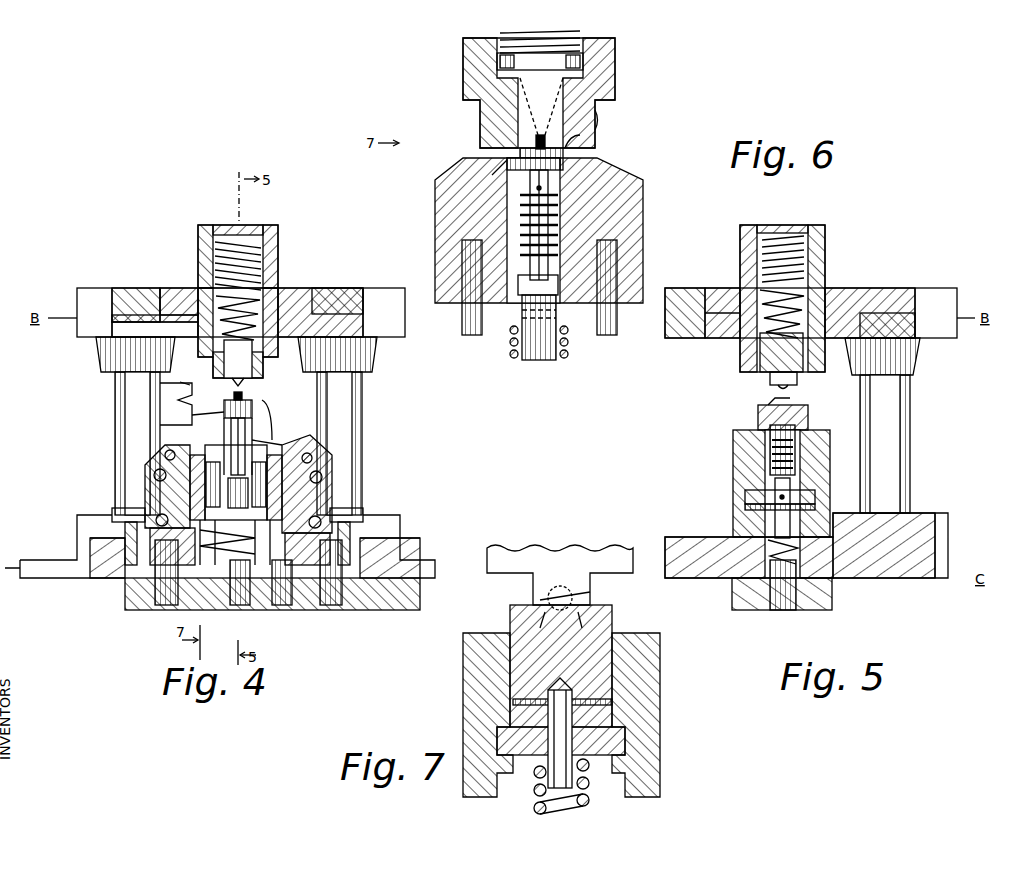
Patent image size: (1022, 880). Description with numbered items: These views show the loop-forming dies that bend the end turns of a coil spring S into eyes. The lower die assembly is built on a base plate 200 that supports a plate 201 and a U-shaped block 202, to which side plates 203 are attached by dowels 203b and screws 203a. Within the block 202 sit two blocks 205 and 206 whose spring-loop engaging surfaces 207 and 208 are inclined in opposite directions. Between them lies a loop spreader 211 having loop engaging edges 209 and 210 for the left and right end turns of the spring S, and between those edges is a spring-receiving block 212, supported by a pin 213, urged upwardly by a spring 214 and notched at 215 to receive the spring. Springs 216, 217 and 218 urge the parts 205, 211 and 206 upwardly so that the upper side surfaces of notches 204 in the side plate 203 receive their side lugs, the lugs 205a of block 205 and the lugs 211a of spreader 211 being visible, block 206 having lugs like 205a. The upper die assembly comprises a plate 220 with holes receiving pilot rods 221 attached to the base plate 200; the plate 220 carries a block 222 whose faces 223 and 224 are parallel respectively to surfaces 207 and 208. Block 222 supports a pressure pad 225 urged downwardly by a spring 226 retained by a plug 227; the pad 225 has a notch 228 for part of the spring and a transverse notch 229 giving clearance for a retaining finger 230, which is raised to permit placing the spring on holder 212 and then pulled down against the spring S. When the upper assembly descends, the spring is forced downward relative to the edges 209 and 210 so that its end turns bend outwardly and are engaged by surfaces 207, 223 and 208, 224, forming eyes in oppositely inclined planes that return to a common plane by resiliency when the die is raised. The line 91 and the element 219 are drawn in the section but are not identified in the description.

In FIG. 4, the line 91 is at (181, 375).
In FIG. 4, the spring S is at (262, 400).
In FIG. 6, the spring S is at (566, 148).
In FIG. 4, the base plate 200 is at (46, 563).
In FIG. 5, the base plate 200 is at (948, 550).
In FIG. 4, the plate 201 is at (125, 598).
In FIG. 5, the plate 201 is at (832, 598).
In FIG. 4, the U-shaped block 202 is at (110, 512).
In FIG. 5, the side plate 203 is at (733, 463).
In FIG. 4, the screw 203a is at (158, 515).
In FIG. 4, the dowel 203b is at (155, 473).
In FIG. 5, the notch 204 is at (815, 506).
In FIG. 7, the notch 204 is at (518, 766).
In FIG. 4, the block 205 is at (165, 450).
In FIG. 6, the block 205 is at (445, 216).
In FIG. 7, the block 205 is at (510, 619).
In FIG. 7, the side lug 205a is at (625, 740).
In FIG. 4, the block 206 is at (282, 458).
In FIG. 6, the block 206 is at (620, 242).
In FIG. 4, the spring-loop engaging surface 207 is at (192, 415).
In FIG. 7, the spring-loop engaging surface 207 is at (548, 625).
In FIG. 4, the spring-loop engaging surface 208 is at (252, 440).
In FIG. 7, the spring-loop engaging surface 208 is at (586, 625).
In FIG. 4, the loop engaging edge 209 is at (192, 402).
In FIG. 6, the loop engaging edge 209 is at (484, 173).
In FIG. 4, the loop engaging edge 210 is at (245, 425).
In FIG. 6, the loop engaging edge 210 is at (563, 165).
In FIG. 4, the loop spreader 211 is at (245, 480).
In FIG. 5, the loop spreader 211 is at (800, 452).
In FIG. 5, the side lug 211a is at (820, 492).
In FIG. 4, the spring-receiving block 212 is at (252, 412).
In FIG. 6, the spring-receiving block 212 is at (560, 185).
In FIG. 5, the spring-receiving block 212 is at (758, 412).
In FIG. 6, the pin 213 is at (548, 240).
In FIG. 5, the pin 213 is at (775, 486).
In FIG. 6, the spring 214 is at (558, 215).
In FIG. 5, the spring 214 is at (772, 450).
In FIG. 5, the notch 215 is at (749, 396).
In FIG. 4, the spring 216 is at (178, 612).
In FIG. 7, the spring 216 is at (586, 766).
In FIG. 4, the spring 217 is at (232, 608).
In FIG. 6, the spring 217 is at (512, 358).
In FIG. 4, the spring 218 is at (288, 608).
In FIG. 4, the conical spring 219 is at (238, 318).
In FIG. 4, the plate 220 is at (382, 288).
In FIG. 6, the plate 220 is at (615, 101).
In FIG. 5, the plate 220 is at (942, 288).
In FIG. 7, the plate 220 is at (566, 575).
In FIG. 4, the pilot rod 221 is at (115, 385).
In FIG. 5, the pilot rod 221 is at (910, 420).
In FIG. 4, the block 222 is at (303, 292).
In FIG. 5, the block 222 is at (842, 290).
In FIG. 7, the face 223 is at (578, 592).
In FIG. 7, the face 224 is at (543, 596).
In FIG. 4, the pressure pad 225 is at (200, 350).
In FIG. 6, the pressure pad 225 is at (583, 65).
In FIG. 5, the pressure pad 225 is at (770, 360).
In FIG. 4, the spring 226 is at (275, 290).
In FIG. 6, the spring 226 is at (583, 36).
In FIG. 5, the spring 226 is at (808, 280).
In FIG. 4, the plug 227 is at (220, 225).
In FIG. 5, the plug 227 is at (800, 244).
In FIG. 5, the notch 228 is at (790, 388).
In FIG. 6, the notch 229 is at (596, 116).
In FIG. 4, the retaining finger 230 is at (233, 390).
In FIG. 6, the retaining finger 230 is at (541, 113).